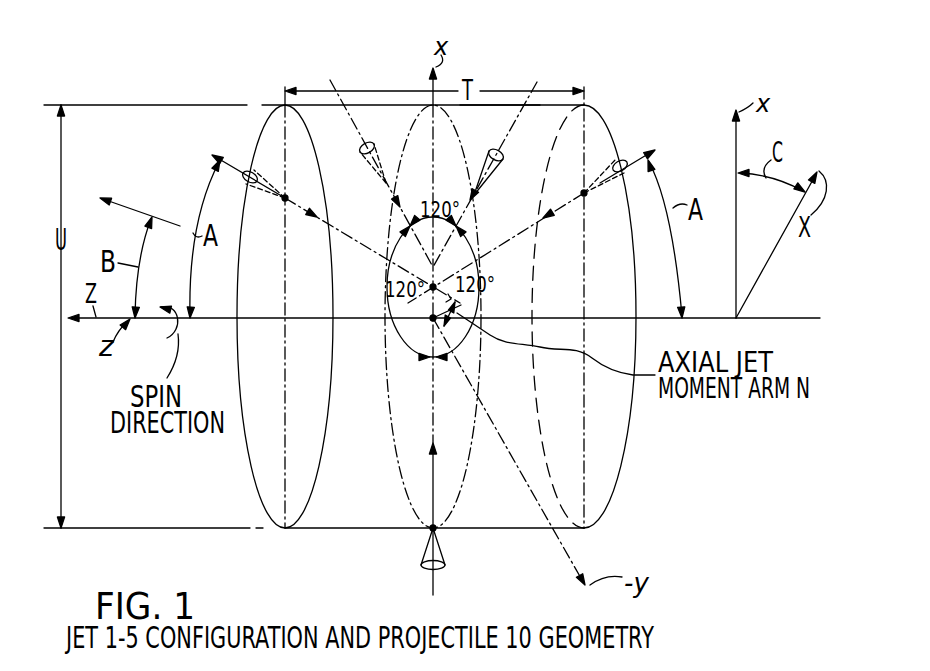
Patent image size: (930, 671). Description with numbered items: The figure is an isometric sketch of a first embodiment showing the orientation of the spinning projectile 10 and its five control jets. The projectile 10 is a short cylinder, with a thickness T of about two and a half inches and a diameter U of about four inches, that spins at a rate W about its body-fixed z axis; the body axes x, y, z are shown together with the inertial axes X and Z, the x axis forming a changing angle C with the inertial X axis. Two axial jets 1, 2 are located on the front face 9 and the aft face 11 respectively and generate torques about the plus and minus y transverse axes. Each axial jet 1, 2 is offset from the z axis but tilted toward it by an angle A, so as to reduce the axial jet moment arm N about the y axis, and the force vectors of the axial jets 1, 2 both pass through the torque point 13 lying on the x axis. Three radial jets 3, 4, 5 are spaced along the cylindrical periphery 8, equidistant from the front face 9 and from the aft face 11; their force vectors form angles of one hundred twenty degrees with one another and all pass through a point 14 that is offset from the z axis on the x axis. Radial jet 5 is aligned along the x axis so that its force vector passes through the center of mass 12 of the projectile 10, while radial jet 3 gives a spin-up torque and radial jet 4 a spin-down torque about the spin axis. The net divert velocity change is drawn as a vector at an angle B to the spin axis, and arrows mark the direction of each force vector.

The axial jet 1 is at (256, 166).
The axial jet 2 is at (612, 162).
The radial jet 3 is at (503, 153).
The radial jet 4 is at (380, 143).
The radial jet 5 is at (444, 560).
The cylindrical periphery 8 is at (490, 104).
The front face 9 is at (265, 457).
The projectile 10 is at (335, 538).
The aft face 11 is at (607, 277).
The center of mass 12 is at (431, 319).
The torque point 13 is at (381, 173).
The point 14 is at (485, 174).